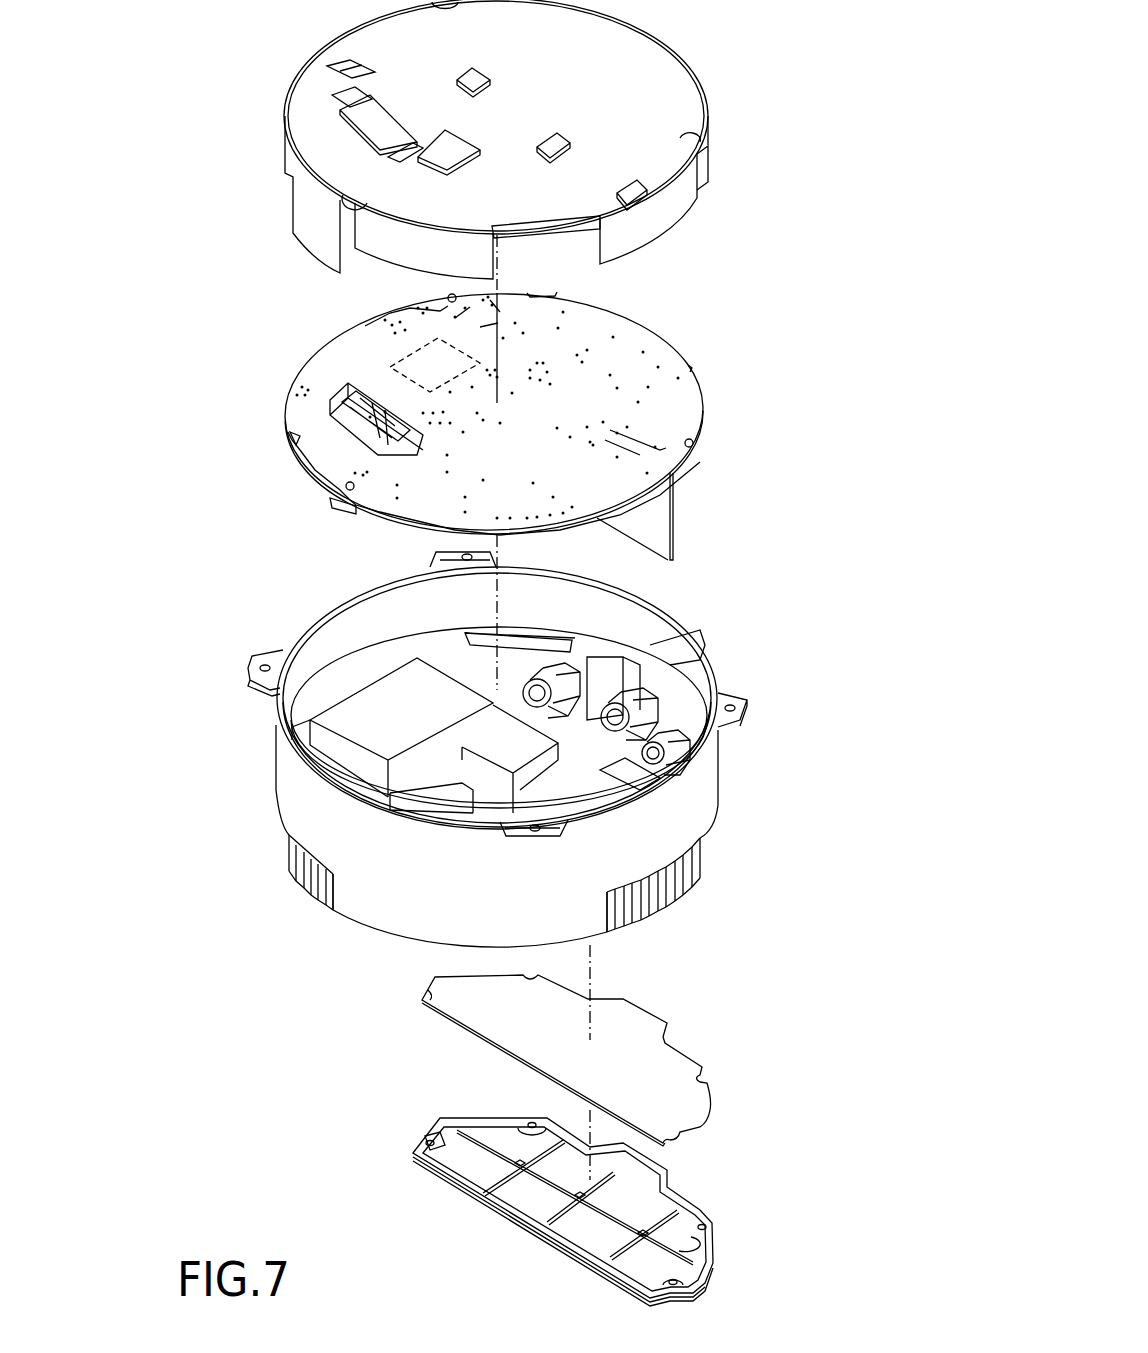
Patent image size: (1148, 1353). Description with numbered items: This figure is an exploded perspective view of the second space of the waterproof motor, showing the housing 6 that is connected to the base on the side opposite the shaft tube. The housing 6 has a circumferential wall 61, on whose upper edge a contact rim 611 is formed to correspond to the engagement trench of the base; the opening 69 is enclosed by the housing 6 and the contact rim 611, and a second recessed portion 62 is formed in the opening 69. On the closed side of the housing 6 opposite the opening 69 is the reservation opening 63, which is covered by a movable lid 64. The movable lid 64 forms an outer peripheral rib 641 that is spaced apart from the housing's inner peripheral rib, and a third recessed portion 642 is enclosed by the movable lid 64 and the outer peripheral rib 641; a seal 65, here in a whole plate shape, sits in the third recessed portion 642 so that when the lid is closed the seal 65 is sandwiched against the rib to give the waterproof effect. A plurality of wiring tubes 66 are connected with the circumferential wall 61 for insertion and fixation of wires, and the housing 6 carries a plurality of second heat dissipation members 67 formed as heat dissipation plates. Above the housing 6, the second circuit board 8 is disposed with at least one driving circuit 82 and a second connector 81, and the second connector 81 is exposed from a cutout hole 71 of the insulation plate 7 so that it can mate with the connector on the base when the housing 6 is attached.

The housing 6 is at (508, 747).
The circumferential wall 61 is at (290, 790).
The second recessed portion 62 is at (355, 630).
The reservation opening 63 is at (607, 768).
The movable lid 64 is at (564, 1189).
The outer peripheral rib 641 is at (415, 1145).
The third recessed portion 642 is at (432, 1140).
The seal 65 is at (670, 1067).
The wiring tube 66 is at (628, 700).
The second heat dissipation member 67 is at (640, 905).
The opening 69 is at (331, 626).
The insulation plate 7 is at (698, 55).
The cutout hole 71 is at (365, 120).
The second circuit board 8 is at (667, 343).
The second connector 81 is at (350, 402).
The driving circuit 82 is at (405, 360).
The contact rim 611 is at (693, 637).